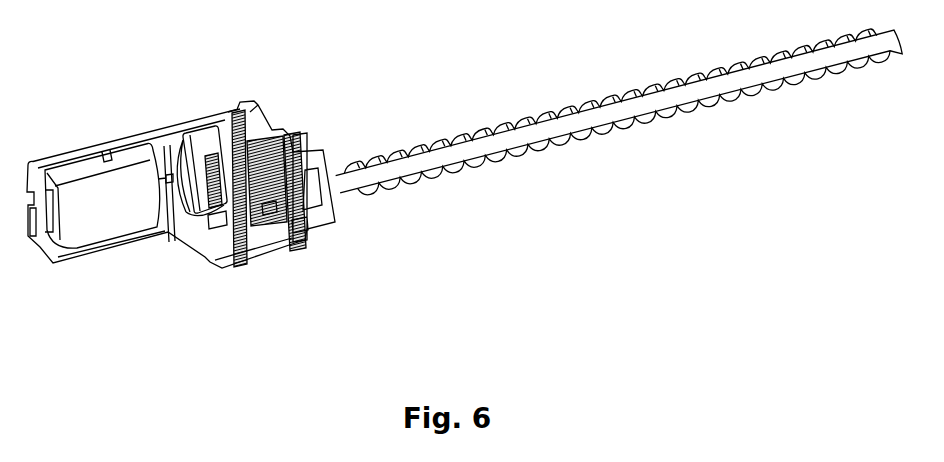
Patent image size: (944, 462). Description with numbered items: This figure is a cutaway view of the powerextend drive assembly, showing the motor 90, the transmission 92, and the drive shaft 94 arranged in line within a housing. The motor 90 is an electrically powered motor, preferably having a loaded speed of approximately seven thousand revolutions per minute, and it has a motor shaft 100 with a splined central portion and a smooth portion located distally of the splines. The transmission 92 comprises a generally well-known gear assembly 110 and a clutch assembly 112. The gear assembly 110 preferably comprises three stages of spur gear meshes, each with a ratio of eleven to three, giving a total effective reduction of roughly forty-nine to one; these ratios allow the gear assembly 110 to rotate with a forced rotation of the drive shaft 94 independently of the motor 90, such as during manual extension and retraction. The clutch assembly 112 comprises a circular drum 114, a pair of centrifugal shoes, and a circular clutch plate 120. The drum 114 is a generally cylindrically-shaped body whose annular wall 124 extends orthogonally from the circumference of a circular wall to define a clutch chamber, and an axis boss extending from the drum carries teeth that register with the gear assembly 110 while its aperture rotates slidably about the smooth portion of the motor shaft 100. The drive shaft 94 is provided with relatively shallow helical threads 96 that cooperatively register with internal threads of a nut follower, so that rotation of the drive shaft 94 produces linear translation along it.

The motor 90 is at (85, 173).
The transmission 92 is at (235, 90).
The drive shaft 94 is at (482, 153).
The helical threads 96 is at (465, 137).
The motor shaft 100 is at (168, 212).
The gear assembly 110 is at (268, 228).
The clutch assembly 112 is at (204, 236).
The circular drum 114 is at (193, 133).
The circular clutch plate 120 is at (188, 213).
The annular wall 124 is at (183, 140).